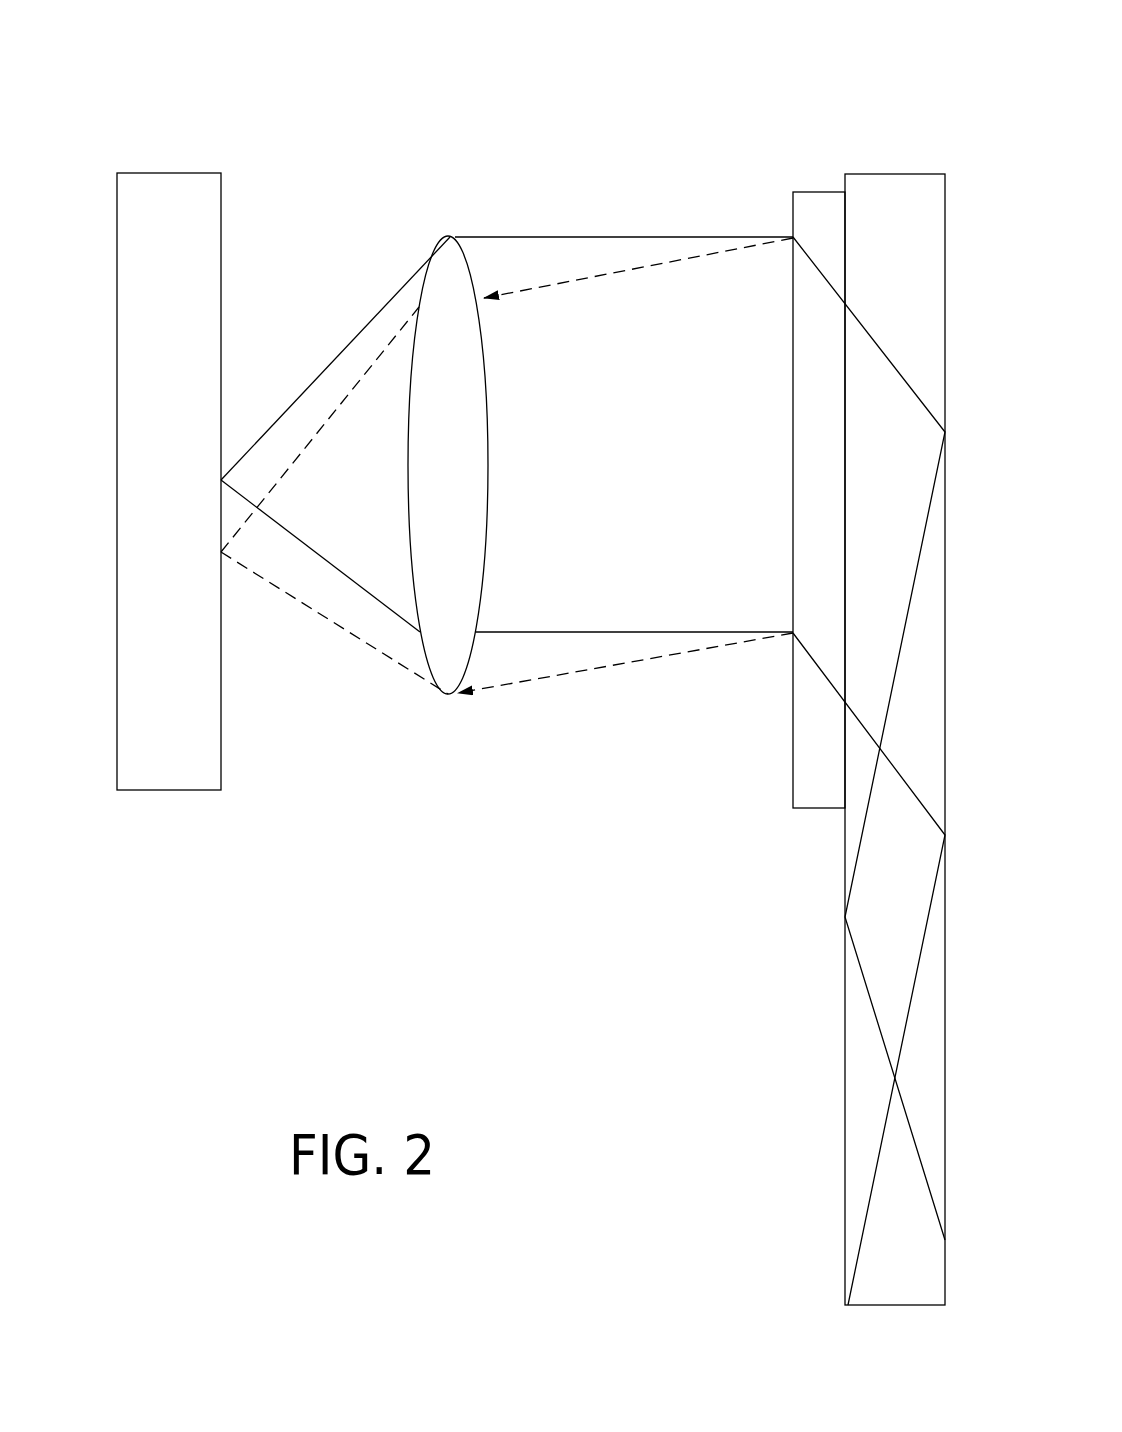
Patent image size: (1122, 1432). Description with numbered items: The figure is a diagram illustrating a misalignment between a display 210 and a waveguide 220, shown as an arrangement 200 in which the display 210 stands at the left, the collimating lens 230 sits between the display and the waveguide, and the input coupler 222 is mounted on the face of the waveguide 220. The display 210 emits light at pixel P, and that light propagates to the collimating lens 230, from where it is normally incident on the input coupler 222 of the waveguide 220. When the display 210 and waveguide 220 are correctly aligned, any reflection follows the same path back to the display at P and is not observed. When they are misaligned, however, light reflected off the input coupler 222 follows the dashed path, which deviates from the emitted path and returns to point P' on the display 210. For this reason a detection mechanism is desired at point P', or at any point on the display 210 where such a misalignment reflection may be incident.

The display system 200 is at (110, 112).
The display 210 is at (226, 756).
The waveguide 220 is at (917, 172).
The input coupler 222 is at (804, 200).
The collimating lens 230 is at (447, 233).